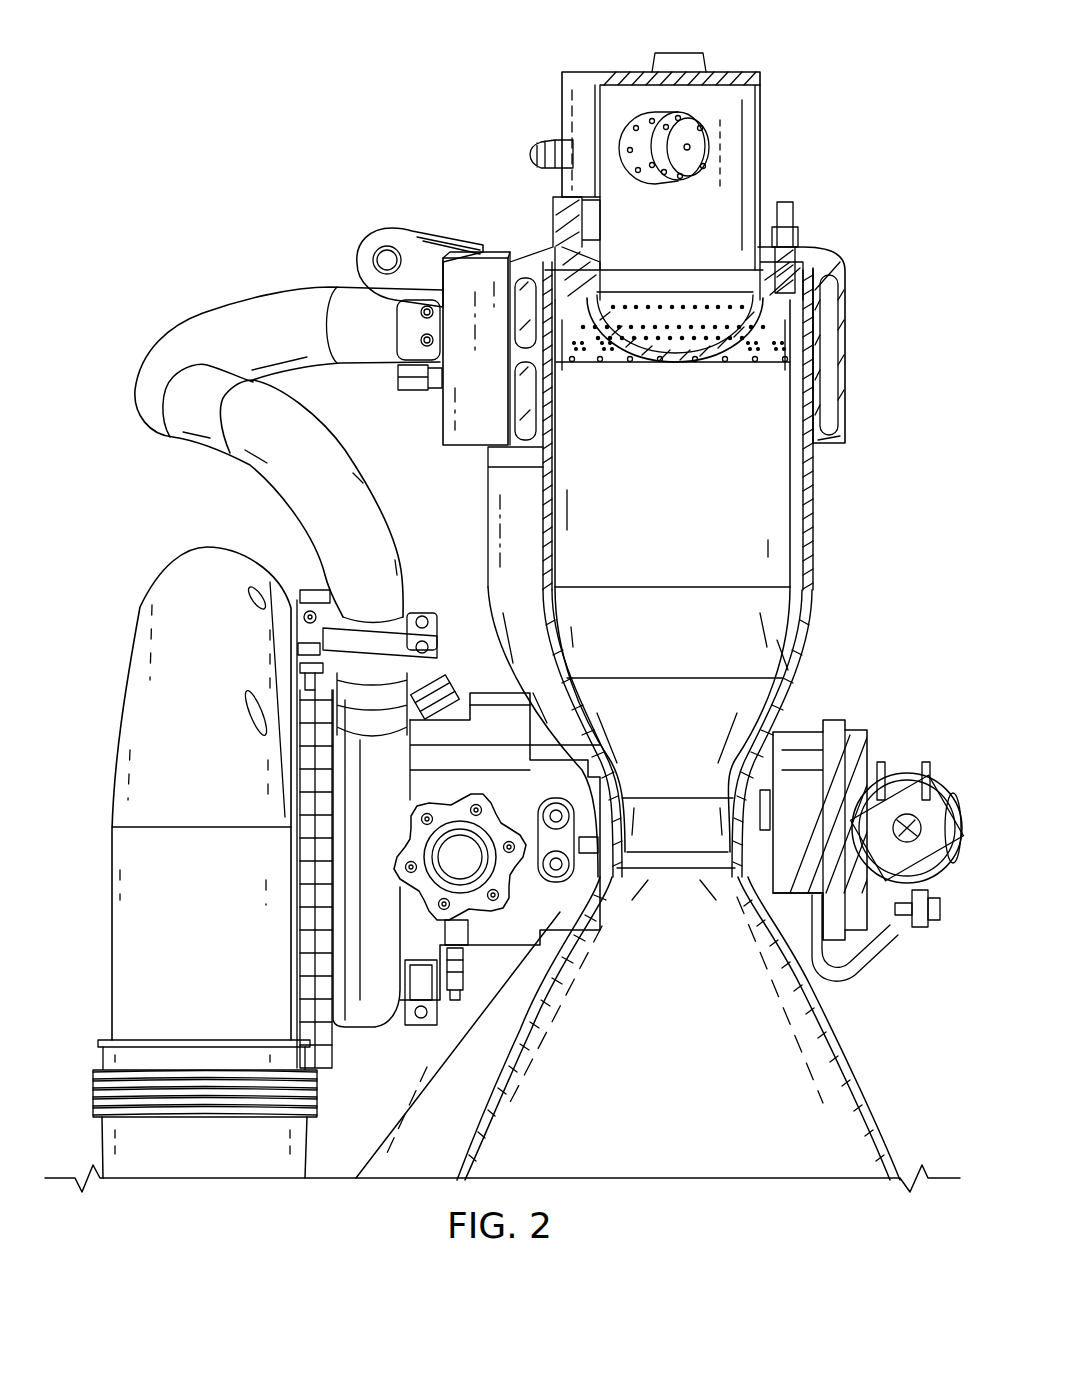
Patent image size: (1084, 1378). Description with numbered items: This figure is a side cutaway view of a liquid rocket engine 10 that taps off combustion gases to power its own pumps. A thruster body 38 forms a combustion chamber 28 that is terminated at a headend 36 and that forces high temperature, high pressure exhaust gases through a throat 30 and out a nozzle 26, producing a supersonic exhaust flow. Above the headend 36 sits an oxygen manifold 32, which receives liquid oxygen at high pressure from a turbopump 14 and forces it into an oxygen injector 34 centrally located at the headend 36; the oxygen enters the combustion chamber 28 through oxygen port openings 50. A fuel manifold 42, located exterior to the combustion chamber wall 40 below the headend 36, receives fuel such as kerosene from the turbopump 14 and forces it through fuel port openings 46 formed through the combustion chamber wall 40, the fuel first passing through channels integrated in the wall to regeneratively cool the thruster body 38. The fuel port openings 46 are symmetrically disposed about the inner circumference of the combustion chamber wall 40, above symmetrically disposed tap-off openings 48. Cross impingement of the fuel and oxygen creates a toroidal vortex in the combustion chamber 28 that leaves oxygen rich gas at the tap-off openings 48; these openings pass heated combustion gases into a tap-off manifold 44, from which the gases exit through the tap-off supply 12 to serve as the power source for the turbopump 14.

The liquid rocket engine 10 is at (504, 622).
The tap-off supply 12 is at (292, 290).
The turbopump 14 is at (112, 945).
The nozzle 26 is at (692, 1113).
The combustion chamber 28 is at (692, 501).
The throat 30 is at (692, 838).
The oxygen manifold 32 is at (761, 114).
The oxygen injector 34 is at (703, 292).
The headend 36 is at (795, 312).
The thruster body 38 is at (838, 478).
The combustion chamber wall 40 is at (790, 530).
The fuel manifold 42 is at (530, 407).
The tap-off manifold 44 is at (533, 317).
The fuel port openings 46 is at (577, 345).
The tap-off openings 48 is at (631, 362).
The oxygen port openings 50 is at (661, 306).